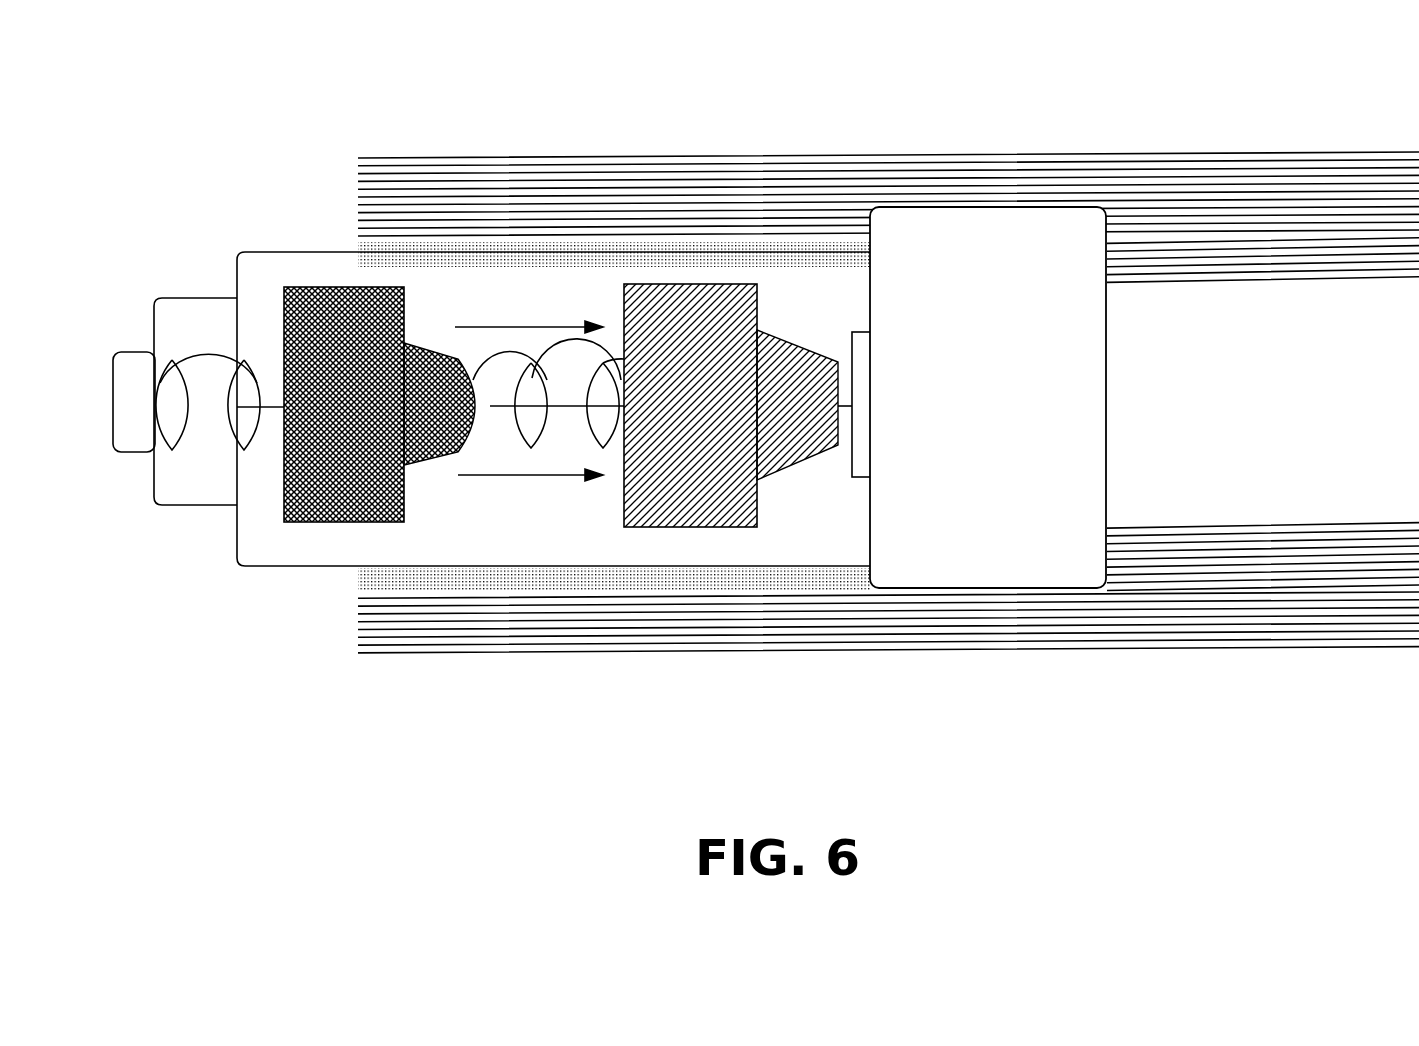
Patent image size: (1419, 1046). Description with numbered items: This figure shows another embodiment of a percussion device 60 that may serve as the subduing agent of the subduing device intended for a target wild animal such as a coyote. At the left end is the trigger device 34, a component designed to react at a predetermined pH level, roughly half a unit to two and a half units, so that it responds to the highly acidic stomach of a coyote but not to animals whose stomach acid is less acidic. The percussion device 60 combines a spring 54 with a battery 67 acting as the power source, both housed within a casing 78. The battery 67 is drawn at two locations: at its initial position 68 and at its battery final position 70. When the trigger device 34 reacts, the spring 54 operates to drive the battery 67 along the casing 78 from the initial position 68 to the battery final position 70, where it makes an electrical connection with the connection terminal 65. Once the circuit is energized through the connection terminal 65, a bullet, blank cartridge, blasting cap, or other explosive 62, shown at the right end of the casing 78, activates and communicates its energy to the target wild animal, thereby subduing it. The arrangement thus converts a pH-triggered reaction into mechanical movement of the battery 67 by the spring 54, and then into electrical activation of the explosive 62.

The percussion device 60 is at (828, 100).
The trigger device 34 is at (135, 453).
The spring 54 is at (518, 368).
The explosive 62 is at (978, 382).
The connection terminal 65 is at (863, 343).
The battery 67 is at (556, 498).
The initial position 68 is at (287, 550).
The battery final position 70 is at (630, 555).
The casing 78 is at (930, 632).